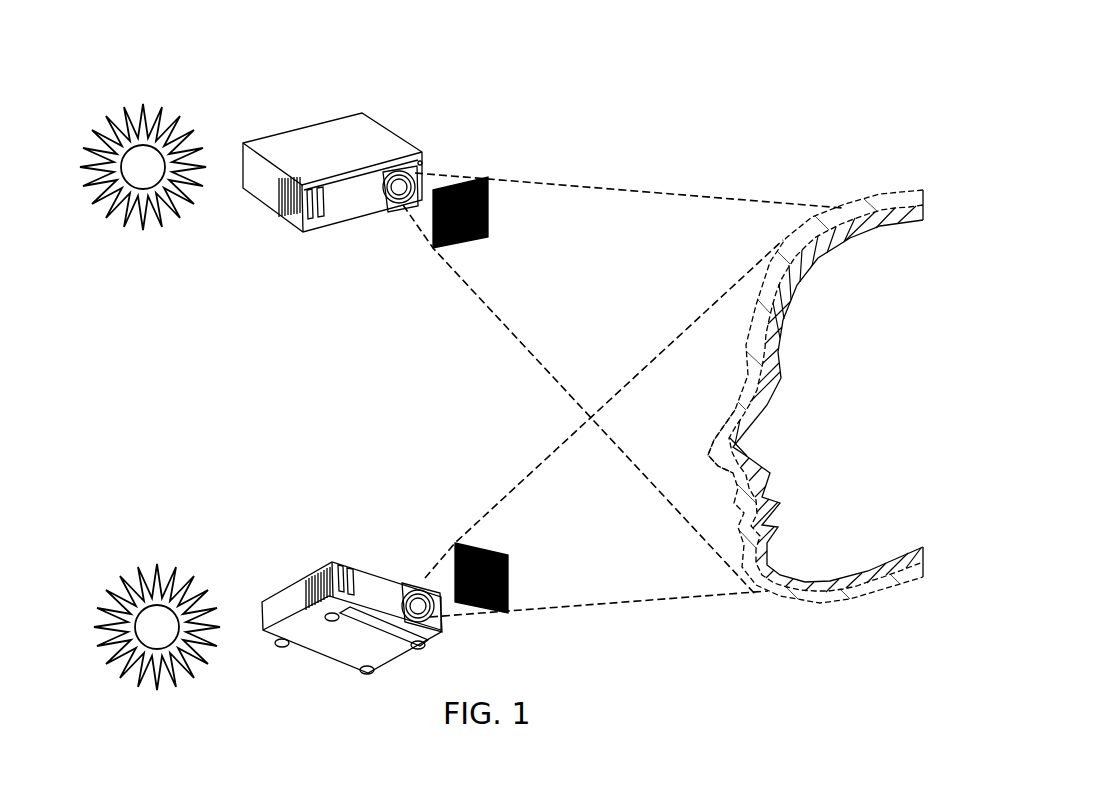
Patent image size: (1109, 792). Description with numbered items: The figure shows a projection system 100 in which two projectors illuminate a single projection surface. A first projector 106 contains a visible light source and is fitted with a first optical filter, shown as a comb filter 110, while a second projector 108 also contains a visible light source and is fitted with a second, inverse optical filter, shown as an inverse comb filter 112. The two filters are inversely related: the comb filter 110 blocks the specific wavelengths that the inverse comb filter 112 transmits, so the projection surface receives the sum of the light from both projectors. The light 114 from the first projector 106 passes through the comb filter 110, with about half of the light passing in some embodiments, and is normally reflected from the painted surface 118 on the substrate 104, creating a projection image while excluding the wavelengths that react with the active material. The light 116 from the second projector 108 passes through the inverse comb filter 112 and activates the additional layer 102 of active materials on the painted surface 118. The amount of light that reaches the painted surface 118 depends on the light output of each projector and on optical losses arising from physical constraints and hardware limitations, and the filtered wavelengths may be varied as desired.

The projection system 100 is at (138, 72).
The additional layer 102 is at (842, 203).
The substrate 104 is at (812, 270).
The first projector 106 is at (293, 138).
The second projector 108 is at (287, 596).
The comb filter 110 is at (488, 177).
The inverse comb filter 112 is at (456, 543).
The light 114 is at (648, 192).
The light 116 is at (580, 440).
The painted surface 118 is at (740, 447).